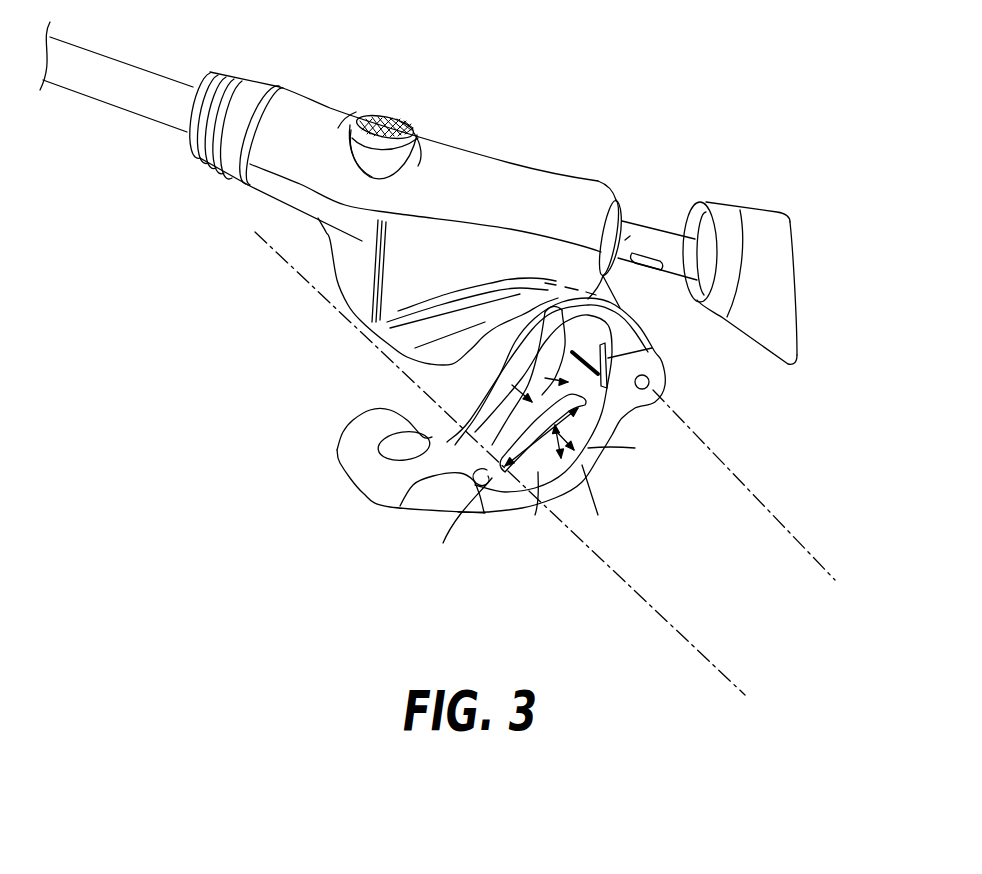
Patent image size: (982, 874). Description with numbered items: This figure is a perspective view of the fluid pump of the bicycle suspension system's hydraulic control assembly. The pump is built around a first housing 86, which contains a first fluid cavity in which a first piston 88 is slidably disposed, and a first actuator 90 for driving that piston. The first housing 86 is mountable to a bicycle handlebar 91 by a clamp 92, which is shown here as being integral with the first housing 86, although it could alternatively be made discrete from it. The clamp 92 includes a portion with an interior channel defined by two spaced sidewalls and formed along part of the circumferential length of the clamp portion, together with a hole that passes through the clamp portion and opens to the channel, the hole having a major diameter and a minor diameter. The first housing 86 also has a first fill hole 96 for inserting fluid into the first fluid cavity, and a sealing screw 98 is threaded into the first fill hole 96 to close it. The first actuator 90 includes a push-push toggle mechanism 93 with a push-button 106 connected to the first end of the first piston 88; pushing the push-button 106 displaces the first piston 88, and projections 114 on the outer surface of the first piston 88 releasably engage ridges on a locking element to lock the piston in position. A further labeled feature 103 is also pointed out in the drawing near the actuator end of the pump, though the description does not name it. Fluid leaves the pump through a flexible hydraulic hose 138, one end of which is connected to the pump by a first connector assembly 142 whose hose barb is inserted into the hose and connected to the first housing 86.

The first housing 86 is at (518, 162).
The first piston 88 is at (667, 236).
The first actuator 90 is at (772, 197).
The bicycle handlebar 91 is at (760, 500).
The clamp 92 is at (642, 486).
The push-push toggle mechanism 93 is at (724, 164).
The first fill hole 96 is at (376, 112).
The sealing screw 98 is at (405, 125).
The gap 103 is at (637, 160).
The push-button 106 is at (790, 323).
The projections 114 is at (650, 268).
The hydraulic hose 138 is at (160, 84).
The first connector assembly 142 is at (212, 195).